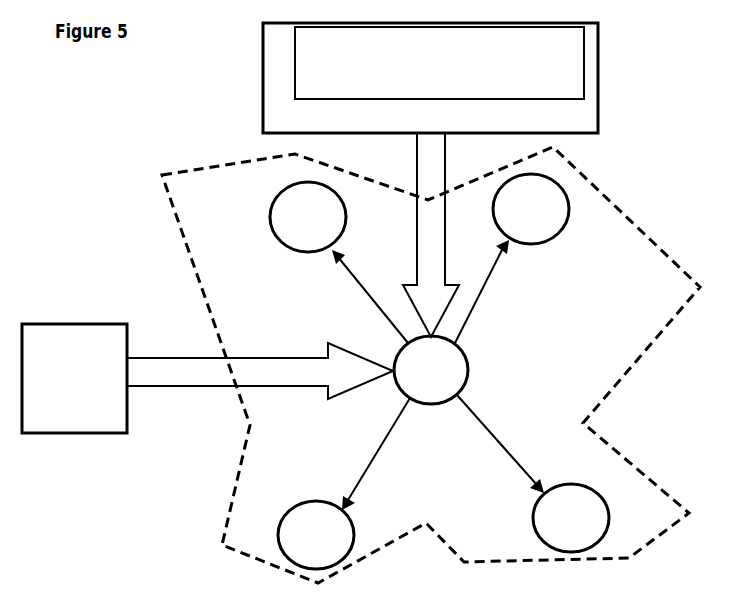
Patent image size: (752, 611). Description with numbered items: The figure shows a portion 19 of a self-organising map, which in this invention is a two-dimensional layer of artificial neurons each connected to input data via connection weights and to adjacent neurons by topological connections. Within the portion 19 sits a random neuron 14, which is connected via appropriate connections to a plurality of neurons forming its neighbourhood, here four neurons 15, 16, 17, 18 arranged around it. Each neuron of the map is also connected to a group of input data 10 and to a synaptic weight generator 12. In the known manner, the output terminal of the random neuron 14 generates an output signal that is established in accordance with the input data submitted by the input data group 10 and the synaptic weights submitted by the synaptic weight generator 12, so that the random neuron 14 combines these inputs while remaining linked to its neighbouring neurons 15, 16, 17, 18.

The input data group 10 is at (207, 378).
The synaptic weight generator 12 is at (430, 180).
The random neuron 14 is at (438, 375).
The neuron 15 is at (308, 217).
The neuron 16 is at (531, 209).
The neuron 17 is at (571, 518).
The neuron 18 is at (316, 535).
The portion of a self-organising map 19 is at (172, 208).